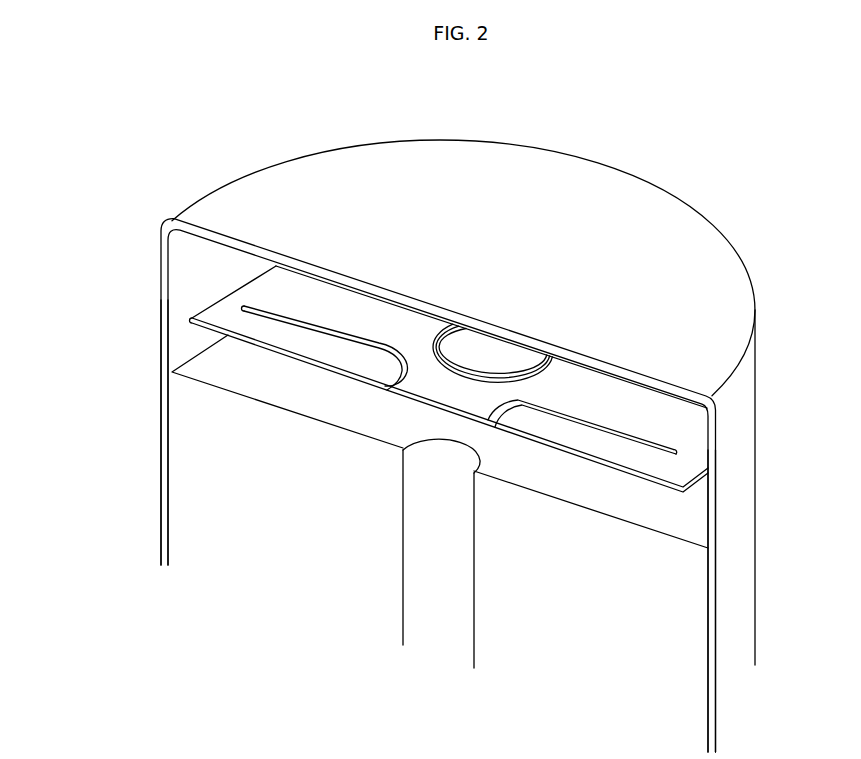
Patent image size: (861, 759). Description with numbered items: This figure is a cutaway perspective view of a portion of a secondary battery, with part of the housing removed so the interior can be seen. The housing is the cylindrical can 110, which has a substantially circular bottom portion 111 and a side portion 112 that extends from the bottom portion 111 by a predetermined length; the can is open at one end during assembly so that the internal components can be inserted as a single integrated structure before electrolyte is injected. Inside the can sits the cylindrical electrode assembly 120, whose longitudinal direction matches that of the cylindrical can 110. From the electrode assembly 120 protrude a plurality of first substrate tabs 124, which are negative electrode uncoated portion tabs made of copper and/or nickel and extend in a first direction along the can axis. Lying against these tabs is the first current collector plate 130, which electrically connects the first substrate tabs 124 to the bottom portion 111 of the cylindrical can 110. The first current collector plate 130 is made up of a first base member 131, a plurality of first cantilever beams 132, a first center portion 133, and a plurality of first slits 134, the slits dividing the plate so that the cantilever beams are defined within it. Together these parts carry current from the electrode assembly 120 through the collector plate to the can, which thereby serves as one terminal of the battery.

The cylindrical can 110 is at (735, 163).
The bottom portion 111 is at (725, 298).
The side portion 112 is at (748, 427).
The cylindrical electrode assembly 120 is at (659, 624).
The first substrate tabs 124 is at (683, 520).
The first current collector plate 130 is at (226, 286).
The first base member 131 is at (273, 287).
The first cantilever beams 132 is at (345, 352).
The first center portion 133 is at (452, 395).
The first slits 134 is at (446, 330).